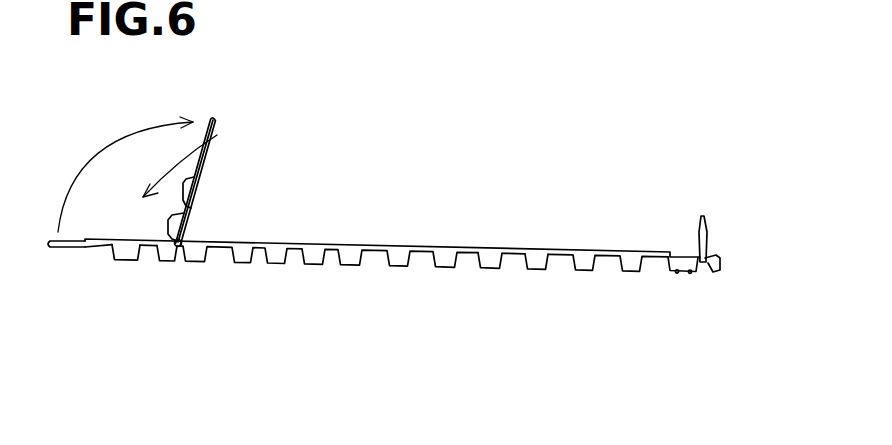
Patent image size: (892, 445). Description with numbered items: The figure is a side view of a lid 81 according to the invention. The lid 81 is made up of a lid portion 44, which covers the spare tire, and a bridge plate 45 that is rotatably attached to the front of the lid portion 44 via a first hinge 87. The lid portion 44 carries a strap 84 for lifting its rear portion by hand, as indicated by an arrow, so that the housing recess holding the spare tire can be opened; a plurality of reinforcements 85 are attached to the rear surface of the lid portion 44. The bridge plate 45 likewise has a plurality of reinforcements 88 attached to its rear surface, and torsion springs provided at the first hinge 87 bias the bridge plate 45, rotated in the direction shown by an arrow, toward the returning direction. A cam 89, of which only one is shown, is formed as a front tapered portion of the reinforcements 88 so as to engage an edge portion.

The lid 81 is at (365, 102).
The lid portion 44 is at (423, 230).
The bridge plate 45 is at (218, 133).
The strap 84 is at (705, 214).
The reinforcements 85 is at (537, 270).
The first hinge 87 is at (173, 243).
The reinforcements 88 is at (167, 261).
The cam 89 is at (110, 252).